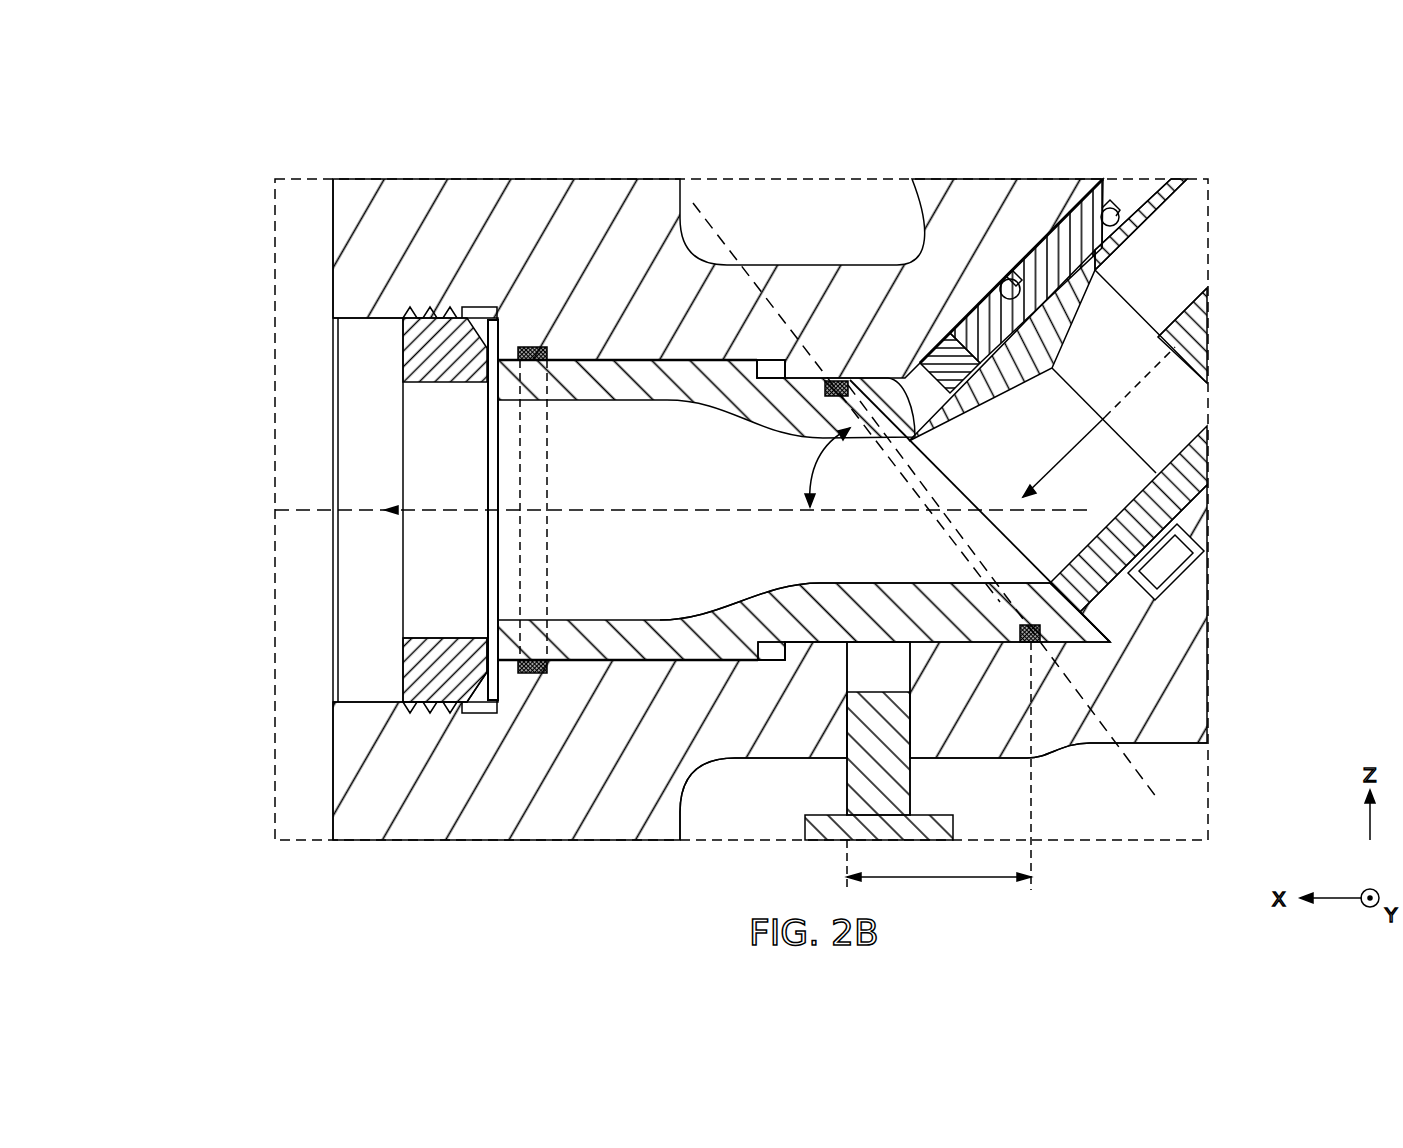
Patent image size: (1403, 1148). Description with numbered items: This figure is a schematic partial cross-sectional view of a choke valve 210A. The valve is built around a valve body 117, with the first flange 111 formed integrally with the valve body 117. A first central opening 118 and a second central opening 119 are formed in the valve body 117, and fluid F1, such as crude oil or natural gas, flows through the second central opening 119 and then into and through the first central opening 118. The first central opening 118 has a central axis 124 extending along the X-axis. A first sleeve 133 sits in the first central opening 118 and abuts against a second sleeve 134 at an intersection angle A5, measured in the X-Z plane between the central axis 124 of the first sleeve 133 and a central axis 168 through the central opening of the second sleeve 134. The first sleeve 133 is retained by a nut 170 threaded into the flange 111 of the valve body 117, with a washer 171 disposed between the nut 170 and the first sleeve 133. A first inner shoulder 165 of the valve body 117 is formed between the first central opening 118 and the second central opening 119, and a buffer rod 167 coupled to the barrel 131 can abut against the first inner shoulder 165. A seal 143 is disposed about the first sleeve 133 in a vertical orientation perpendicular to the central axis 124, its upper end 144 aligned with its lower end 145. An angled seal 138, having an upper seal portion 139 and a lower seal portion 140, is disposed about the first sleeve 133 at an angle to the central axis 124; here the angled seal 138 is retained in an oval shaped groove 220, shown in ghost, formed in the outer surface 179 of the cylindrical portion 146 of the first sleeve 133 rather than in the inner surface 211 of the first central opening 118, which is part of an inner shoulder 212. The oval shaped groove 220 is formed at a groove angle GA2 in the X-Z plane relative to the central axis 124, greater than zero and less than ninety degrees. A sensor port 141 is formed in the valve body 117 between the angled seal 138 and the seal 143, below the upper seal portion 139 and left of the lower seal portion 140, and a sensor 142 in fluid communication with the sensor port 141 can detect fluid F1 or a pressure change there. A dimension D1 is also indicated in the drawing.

The choke valve 210A is at (276, 102).
The first flange 111 is at (375, 815).
The valve body 117 is at (745, 715).
The first central opening 118 is at (658, 663).
The second central opening 119 is at (972, 283).
The central axis 124 is at (318, 510).
The barrel 131 is at (1073, 222).
The first sleeve 133 is at (650, 380).
The second sleeve 134 is at (1033, 340).
The angled seal 138 is at (877, 436).
The upper seal portion 139 is at (840, 380).
The lower seal portion 140 is at (1033, 622).
The sensor port 141 is at (860, 692).
The sensor 142 is at (862, 797).
The seal 143 is at (518, 463).
The upper end 144 is at (535, 345).
The lower end 145 is at (535, 673).
The cylindrical portion 146 is at (808, 600).
The first inner shoulder 165 is at (1125, 610).
The buffer rod 167 is at (1175, 588).
The central axis 168 is at (1147, 374).
The nut 170 is at (432, 360).
The washer 171 is at (497, 665).
The outer surface 179 is at (867, 602).
The inner surface 211 is at (958, 645).
The inner shoulder 212 is at (755, 645).
The oval shaped groove 220 is at (790, 372).
The fluid F1 is at (473, 512).
The intersection angle A5 is at (1108, 428).
The groove angle GA2 is at (820, 470).
The distance D1 is at (939, 781).